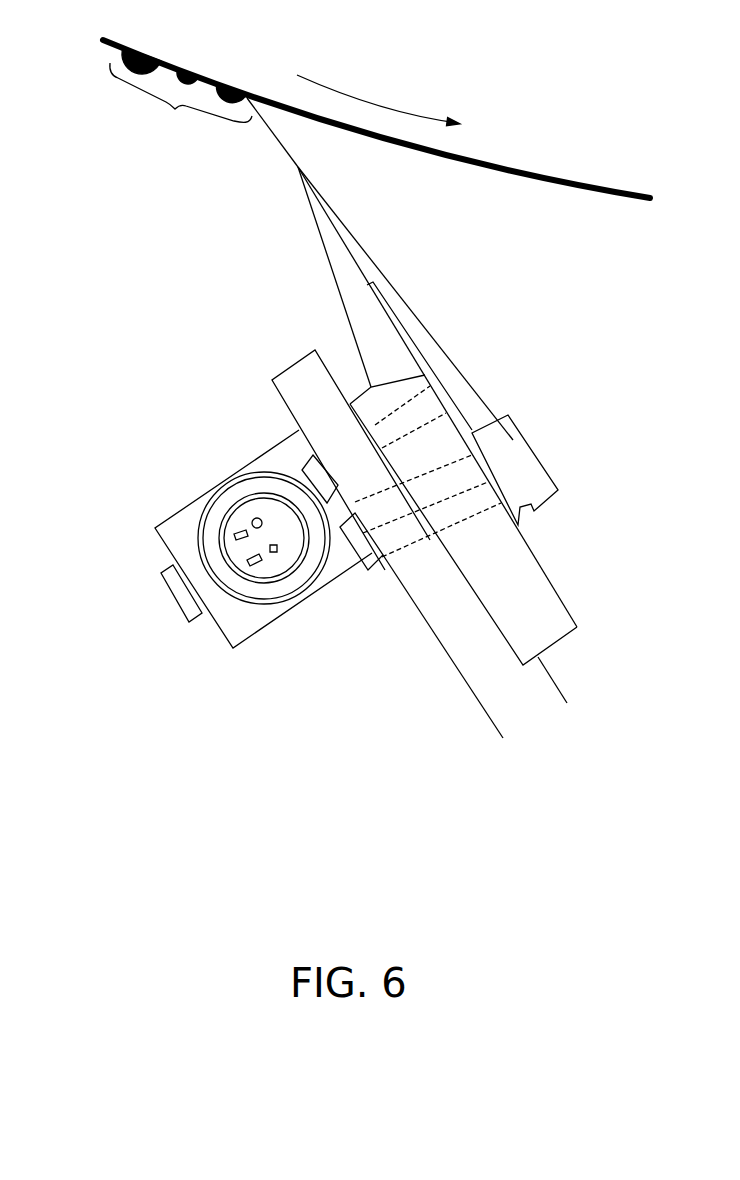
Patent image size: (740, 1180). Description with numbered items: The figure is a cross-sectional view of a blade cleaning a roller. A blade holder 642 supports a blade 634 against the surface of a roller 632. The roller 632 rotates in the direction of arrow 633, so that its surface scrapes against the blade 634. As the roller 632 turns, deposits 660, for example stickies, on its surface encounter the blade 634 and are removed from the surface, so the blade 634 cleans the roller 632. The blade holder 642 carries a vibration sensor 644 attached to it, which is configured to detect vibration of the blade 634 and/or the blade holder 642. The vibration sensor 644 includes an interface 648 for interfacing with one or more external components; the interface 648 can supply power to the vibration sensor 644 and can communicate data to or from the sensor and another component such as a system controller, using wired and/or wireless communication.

The roller 632 is at (467, 49).
The arrow 633 is at (343, 90).
The blade 634 is at (276, 131).
The blade holder 642 is at (403, 307).
The vibration sensor 644 is at (180, 527).
The interface 648 is at (278, 550).
The deposits 660 is at (181, 97).